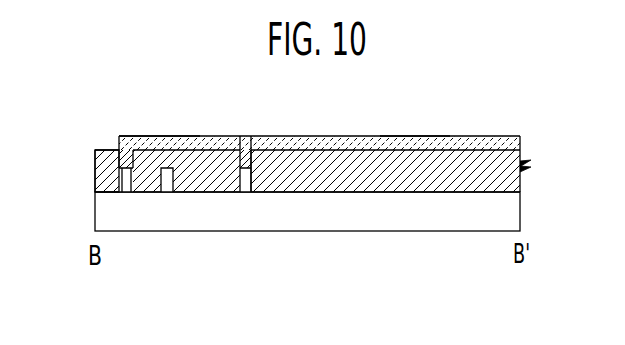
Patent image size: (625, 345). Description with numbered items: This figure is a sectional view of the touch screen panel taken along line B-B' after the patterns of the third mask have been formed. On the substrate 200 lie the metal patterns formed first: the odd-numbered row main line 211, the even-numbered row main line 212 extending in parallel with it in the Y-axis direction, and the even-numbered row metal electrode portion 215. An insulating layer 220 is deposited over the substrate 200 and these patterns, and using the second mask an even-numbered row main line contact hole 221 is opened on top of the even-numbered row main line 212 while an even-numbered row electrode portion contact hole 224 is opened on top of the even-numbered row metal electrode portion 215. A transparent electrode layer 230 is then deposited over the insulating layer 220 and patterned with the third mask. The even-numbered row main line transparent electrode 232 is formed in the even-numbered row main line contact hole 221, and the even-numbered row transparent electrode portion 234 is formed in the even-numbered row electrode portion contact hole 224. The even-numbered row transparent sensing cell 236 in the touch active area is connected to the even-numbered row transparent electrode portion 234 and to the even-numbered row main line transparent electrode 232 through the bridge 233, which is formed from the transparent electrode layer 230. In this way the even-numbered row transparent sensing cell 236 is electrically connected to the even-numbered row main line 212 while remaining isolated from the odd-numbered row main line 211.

The substrate 200 is at (520, 203).
The odd-numbered row main line 211 is at (167, 180).
The even-numbered row main line 212 is at (125, 180).
The even-numbered row metal electrode portion 215 is at (246, 180).
The insulating layer 220 is at (520, 181).
The even-numbered row main line contact hole 221 is at (108, 163).
The even-numbered row electrode portion contact hole 224 is at (253, 160).
The transparent electrode layer 230 is at (520, 140).
The even-numbered row main line transparent electrode 232 is at (124, 144).
The bridge 233 is at (161, 136).
The even-numbered row transparent electrode portion 234 is at (247, 136).
The even-numbered row transparent sensing cell 236 is at (415, 136).